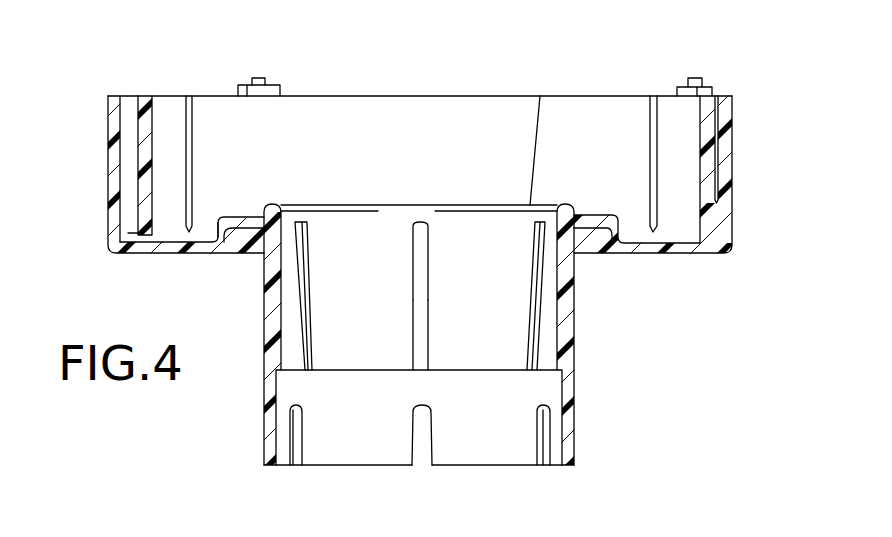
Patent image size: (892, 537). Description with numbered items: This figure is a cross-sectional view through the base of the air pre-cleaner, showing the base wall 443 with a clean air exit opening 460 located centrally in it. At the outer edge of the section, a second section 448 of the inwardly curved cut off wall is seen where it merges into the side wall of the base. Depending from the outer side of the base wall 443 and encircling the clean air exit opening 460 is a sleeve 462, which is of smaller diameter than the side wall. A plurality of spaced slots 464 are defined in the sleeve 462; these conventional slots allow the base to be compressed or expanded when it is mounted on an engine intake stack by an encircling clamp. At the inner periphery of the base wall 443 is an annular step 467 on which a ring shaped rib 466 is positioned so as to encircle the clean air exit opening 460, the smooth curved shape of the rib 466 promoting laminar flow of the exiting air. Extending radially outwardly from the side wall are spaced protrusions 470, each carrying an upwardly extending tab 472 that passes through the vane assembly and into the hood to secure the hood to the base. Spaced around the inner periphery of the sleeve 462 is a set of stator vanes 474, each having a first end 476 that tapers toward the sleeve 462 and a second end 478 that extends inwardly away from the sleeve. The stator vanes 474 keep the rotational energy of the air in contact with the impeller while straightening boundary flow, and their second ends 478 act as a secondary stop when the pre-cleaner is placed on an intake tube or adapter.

The base wall 443 is at (143, 253).
The second section 448 is at (130, 182).
The clean air exit opening 460 is at (462, 228).
The sleeve 462 is at (572, 330).
The slots 464 is at (420, 457).
The ring shaped rib 466 is at (567, 207).
The annular step 467 is at (240, 223).
The protrusions 470 is at (683, 90).
The tab 472 is at (697, 78).
The stator vanes 474 is at (436, 339).
The first end 476 is at (420, 232).
The second end 478 is at (420, 365).